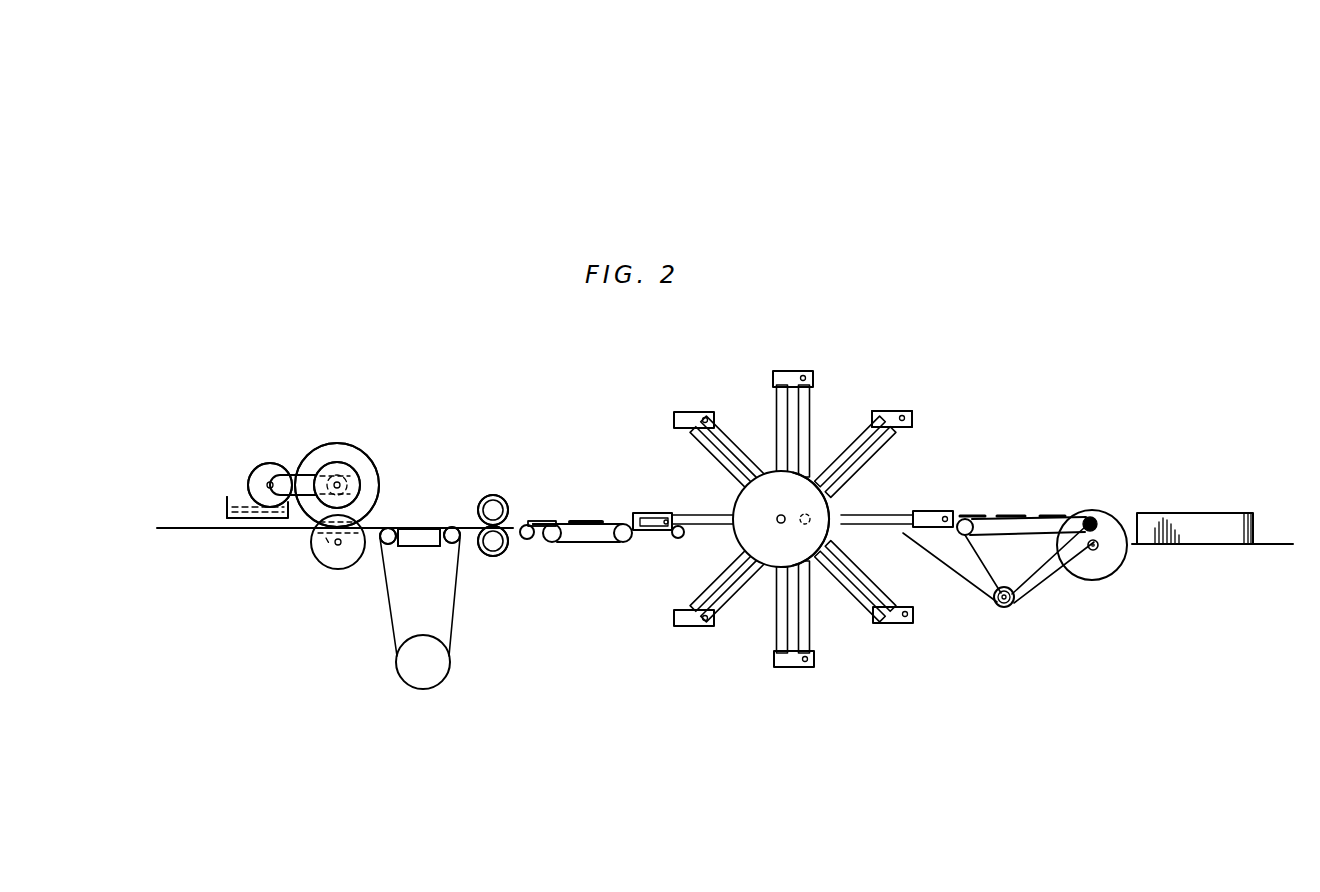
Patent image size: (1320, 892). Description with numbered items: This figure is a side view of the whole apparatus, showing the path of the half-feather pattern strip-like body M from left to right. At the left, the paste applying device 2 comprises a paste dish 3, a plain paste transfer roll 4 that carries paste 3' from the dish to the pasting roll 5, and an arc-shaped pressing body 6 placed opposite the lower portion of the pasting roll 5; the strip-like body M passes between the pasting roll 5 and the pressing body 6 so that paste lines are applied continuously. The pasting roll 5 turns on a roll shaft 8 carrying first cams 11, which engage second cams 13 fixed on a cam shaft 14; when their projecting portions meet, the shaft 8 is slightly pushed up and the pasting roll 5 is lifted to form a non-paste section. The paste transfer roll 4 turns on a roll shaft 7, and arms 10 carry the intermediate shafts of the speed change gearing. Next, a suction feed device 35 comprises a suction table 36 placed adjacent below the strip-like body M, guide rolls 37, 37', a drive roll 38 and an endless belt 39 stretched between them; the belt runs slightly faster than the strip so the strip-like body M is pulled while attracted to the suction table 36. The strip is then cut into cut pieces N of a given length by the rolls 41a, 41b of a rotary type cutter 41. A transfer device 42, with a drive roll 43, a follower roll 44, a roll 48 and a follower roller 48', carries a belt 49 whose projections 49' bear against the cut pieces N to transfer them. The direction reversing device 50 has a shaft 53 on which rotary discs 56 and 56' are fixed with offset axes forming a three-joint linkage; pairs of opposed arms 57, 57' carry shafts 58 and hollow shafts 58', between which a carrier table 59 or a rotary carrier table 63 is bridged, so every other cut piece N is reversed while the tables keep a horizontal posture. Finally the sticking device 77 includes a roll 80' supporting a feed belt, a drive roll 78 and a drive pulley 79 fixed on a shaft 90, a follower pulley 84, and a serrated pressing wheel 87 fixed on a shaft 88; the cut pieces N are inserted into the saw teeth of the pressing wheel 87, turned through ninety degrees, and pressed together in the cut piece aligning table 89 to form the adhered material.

The half-feather pattern strip-like body M is at (212, 535).
The paste applying device 2 is at (337, 434).
The paste dish 3 is at (218, 491).
The paste 3' is at (208, 487).
The paste transfer roll 4 is at (267, 464).
The pasting roll 5 is at (363, 460).
The pressing body 6 is at (316, 535).
The roll shaft 7 is at (266, 484).
The roll shaft 8 is at (341, 485).
The arms 10 is at (303, 480).
The first cams 11 is at (352, 492).
The second cams 13 is at (332, 568).
The cam shaft 14 is at (334, 546).
The suction feed device 35 is at (436, 490).
The suction table 36 is at (420, 536).
The guide roll 37 is at (366, 566).
The guide roll 37' is at (440, 562).
The drive roll 38 is at (437, 660).
The endless belt 39 is at (451, 624).
The rotary type cutter 41 is at (480, 479).
The cutter roll 41a is at (498, 500).
The cutter roll 41b is at (490, 548).
The transfer device 42 is at (602, 457).
The drive roll 43 is at (526, 540).
The follower roll 44 is at (678, 539).
The drive roll 48 is at (548, 560).
The follower roller 48' is at (632, 554).
The belt 49 is at (577, 554).
The projections 49' is at (605, 488).
The cut pieces N is at (538, 522).
The direction reversing device 50 is at (815, 492).
The shaft 53 is at (778, 516).
The rotary disc 56 is at (781, 543).
The rotary disc 56' is at (852, 519).
The arm 57 is at (797, 518).
The arm 57' is at (827, 431).
The shaft 58 is at (774, 360).
The hollow shaft 58' is at (834, 359).
The carrier table 59 is at (912, 418).
The rotary carrier table 63 is at (887, 410).
The sticking device 77 is at (1037, 458).
The drive roll 78 is at (1006, 586).
The drive pulley 79 is at (1012, 604).
The roll 80' is at (914, 543).
The follower pulley 84 is at (915, 560).
The serrated pressing wheel 87 is at (1108, 520).
The shaft 88 is at (1093, 551).
The cut piece aligning table 89 is at (1265, 540).
The shaft 90 is at (1003, 606).